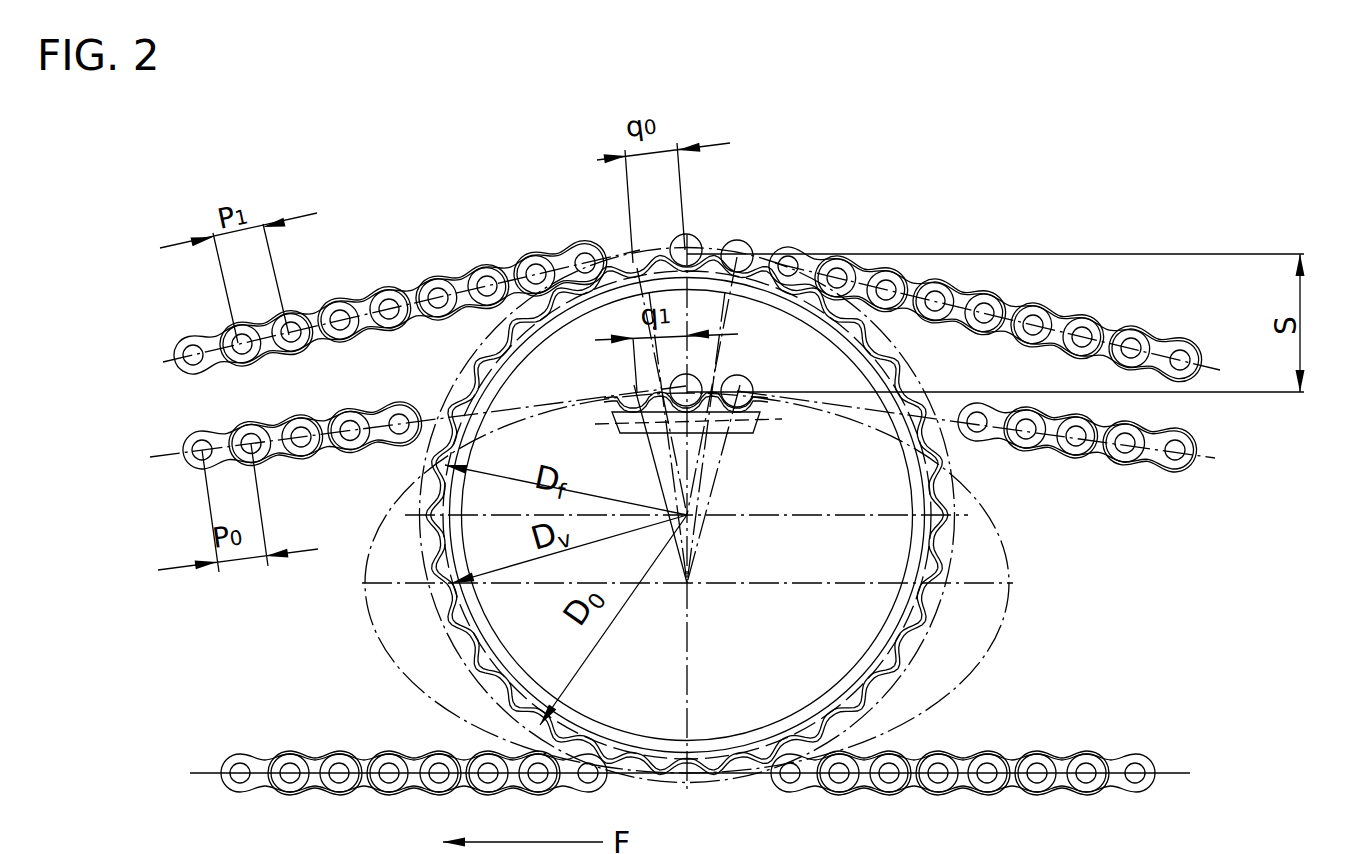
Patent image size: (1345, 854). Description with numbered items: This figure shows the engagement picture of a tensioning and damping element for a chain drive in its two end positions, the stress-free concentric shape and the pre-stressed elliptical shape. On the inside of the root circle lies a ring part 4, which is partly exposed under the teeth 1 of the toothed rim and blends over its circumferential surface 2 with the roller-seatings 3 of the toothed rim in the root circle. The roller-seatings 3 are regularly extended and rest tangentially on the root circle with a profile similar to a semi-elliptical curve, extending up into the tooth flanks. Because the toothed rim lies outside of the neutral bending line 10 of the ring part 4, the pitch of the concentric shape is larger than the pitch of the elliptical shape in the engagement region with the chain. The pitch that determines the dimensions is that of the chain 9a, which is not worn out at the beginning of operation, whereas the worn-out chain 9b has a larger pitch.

The teeth 1 is at (925, 637).
The circumferential surface 2 is at (933, 542).
The roller-seatings 3 is at (900, 653).
The ring part 4 is at (900, 610).
The chain 9a is at (190, 438).
The worn-out chain 9b is at (187, 340).
The neutral bending line 10 is at (784, 425).